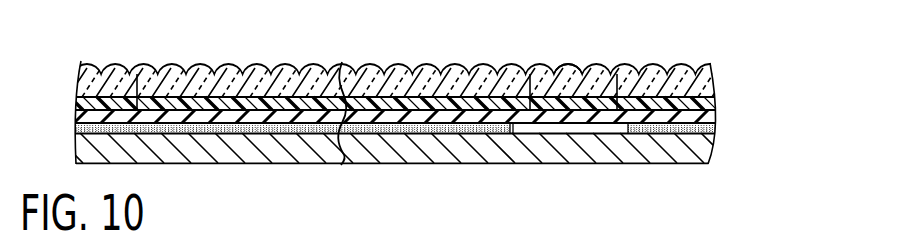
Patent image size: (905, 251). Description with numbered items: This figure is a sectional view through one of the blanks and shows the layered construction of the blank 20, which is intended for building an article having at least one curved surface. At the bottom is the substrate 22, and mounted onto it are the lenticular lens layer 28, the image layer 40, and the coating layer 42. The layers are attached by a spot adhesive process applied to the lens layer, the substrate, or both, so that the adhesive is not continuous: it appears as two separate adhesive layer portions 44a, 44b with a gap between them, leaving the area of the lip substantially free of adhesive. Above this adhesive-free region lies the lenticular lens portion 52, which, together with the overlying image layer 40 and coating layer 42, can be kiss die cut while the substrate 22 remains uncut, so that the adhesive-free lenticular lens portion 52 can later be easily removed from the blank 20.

The blank 20 is at (662, 34).
The substrate 22 is at (692, 150).
The lenticular lens layer 28 is at (693, 71).
The image layer 40 is at (700, 102).
The coating layer 42 is at (713, 117).
The adhesive layer portion 44a is at (495, 131).
The adhesive layer portion 44b is at (714, 129).
The lenticular lens portion 52 is at (573, 71).